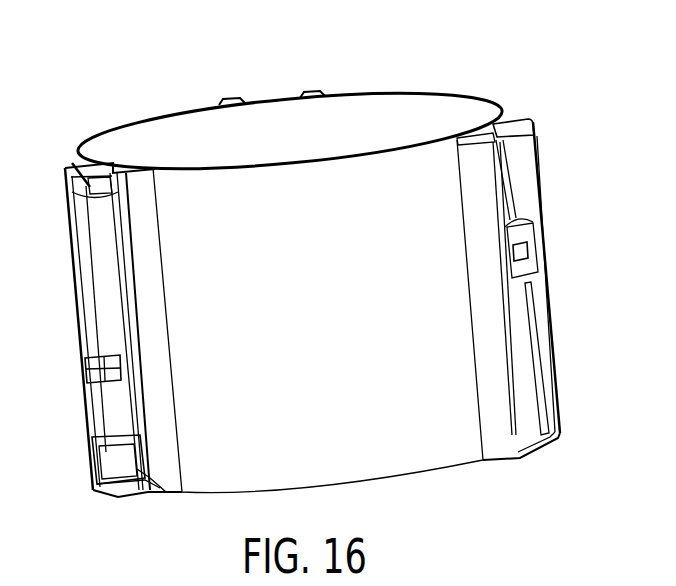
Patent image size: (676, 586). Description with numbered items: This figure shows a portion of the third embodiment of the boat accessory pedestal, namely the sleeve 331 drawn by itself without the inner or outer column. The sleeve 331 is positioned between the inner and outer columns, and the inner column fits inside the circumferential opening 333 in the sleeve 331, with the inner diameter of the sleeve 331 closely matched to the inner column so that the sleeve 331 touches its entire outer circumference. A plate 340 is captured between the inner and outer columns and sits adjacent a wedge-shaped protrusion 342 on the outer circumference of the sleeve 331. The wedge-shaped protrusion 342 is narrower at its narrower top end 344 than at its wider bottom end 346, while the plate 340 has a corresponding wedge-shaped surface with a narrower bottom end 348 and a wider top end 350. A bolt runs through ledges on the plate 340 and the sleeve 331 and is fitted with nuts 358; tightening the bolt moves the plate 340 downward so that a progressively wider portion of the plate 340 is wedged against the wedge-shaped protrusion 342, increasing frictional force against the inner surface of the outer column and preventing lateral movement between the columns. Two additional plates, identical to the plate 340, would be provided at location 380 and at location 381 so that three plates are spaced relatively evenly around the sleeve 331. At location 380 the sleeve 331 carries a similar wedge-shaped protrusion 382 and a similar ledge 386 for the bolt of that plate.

The sleeve 331 is at (444, 464).
The circumferential opening 333 is at (372, 130).
The plate 340 is at (103, 310).
The wedge-shaped protrusion 342 is at (112, 462).
The narrower top end 344 is at (117, 159).
The wider bottom end 346 is at (97, 488).
The narrower bottom end 348 is at (125, 453).
The wider top end 350 is at (73, 168).
The nuts 358 is at (92, 366).
The location 380 is at (551, 289).
The location 381 is at (268, 98).
The wedge-shaped protrusion 382 is at (533, 406).
The ledge 386 is at (530, 250).